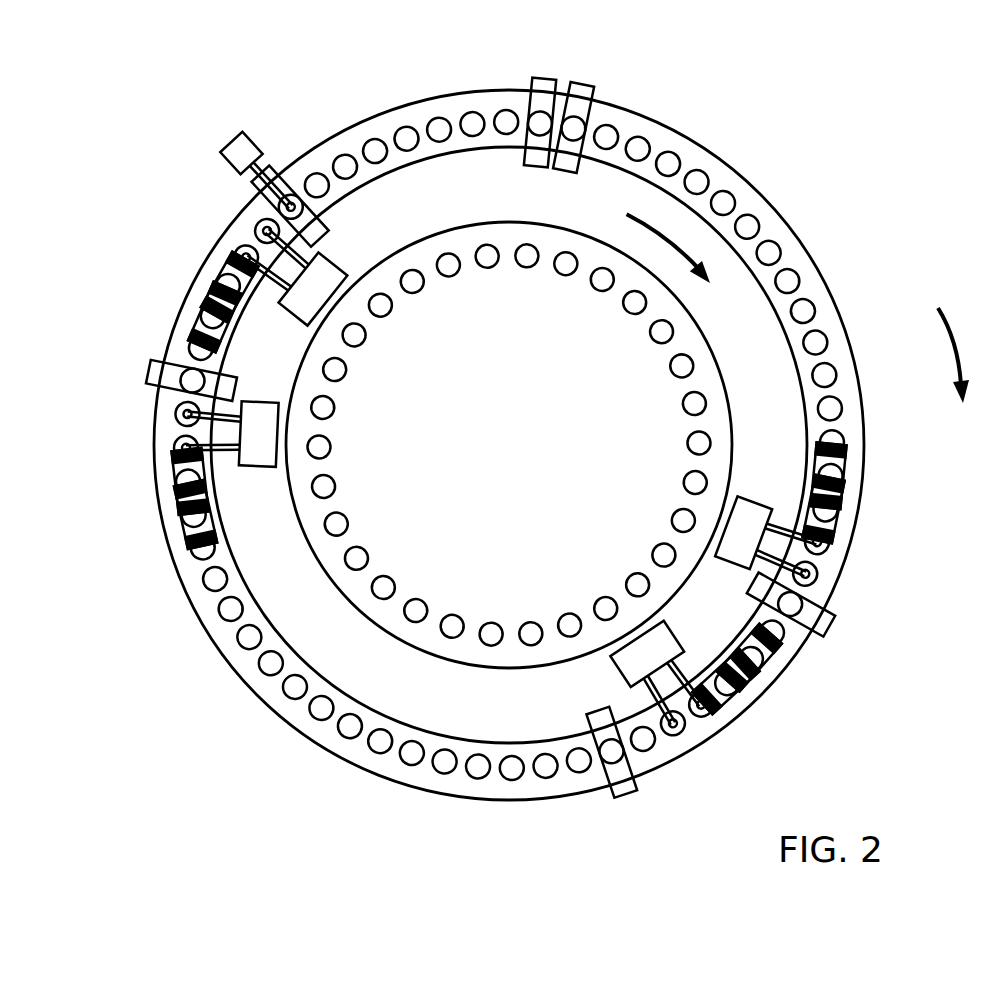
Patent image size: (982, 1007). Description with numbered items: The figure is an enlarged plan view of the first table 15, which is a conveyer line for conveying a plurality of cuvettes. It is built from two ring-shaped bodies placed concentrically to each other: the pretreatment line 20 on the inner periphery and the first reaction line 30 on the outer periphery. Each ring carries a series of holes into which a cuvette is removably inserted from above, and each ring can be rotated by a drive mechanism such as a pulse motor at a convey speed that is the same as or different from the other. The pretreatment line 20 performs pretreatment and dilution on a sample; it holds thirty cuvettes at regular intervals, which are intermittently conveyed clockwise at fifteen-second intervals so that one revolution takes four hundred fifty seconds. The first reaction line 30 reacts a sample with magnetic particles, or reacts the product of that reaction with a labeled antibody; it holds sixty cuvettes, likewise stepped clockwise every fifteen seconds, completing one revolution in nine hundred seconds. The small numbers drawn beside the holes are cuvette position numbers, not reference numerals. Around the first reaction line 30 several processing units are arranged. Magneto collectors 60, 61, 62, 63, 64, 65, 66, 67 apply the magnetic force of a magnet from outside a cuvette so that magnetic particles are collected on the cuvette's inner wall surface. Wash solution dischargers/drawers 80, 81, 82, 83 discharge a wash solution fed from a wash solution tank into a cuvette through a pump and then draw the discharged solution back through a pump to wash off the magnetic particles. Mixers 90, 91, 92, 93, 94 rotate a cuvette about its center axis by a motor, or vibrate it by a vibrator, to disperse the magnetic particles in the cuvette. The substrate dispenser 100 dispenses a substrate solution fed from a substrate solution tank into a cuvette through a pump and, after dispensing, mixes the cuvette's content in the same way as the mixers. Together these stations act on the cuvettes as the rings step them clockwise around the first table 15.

The first table 15 is at (851, 133).
The pretreatment line 20 is at (712, 376).
The first reaction line 30 is at (818, 291).
The magneto collector 60 is at (803, 463).
The magneto collector 61 is at (797, 493).
The magneto collector 62 is at (740, 636).
The magneto collector 63 is at (717, 660).
The magneto collector 64 is at (224, 517).
The magneto collector 65 is at (224, 480).
The magneto collector 66 is at (218, 350).
The magneto collector 67 is at (242, 318).
The wash solution discharger/drawer 80 is at (742, 528).
The wash solution discharger/drawer 81 is at (652, 648).
The wash solution discharger/drawer 82 is at (270, 440).
The wash solution discharger/drawer 83 is at (322, 290).
The mixer 90 is at (554, 76).
The mixer 91 is at (588, 79).
The mixer 92 is at (838, 628).
The mixer 93 is at (628, 800).
The mixer 94 is at (152, 364).
The substrate dispenser 100 is at (224, 147).